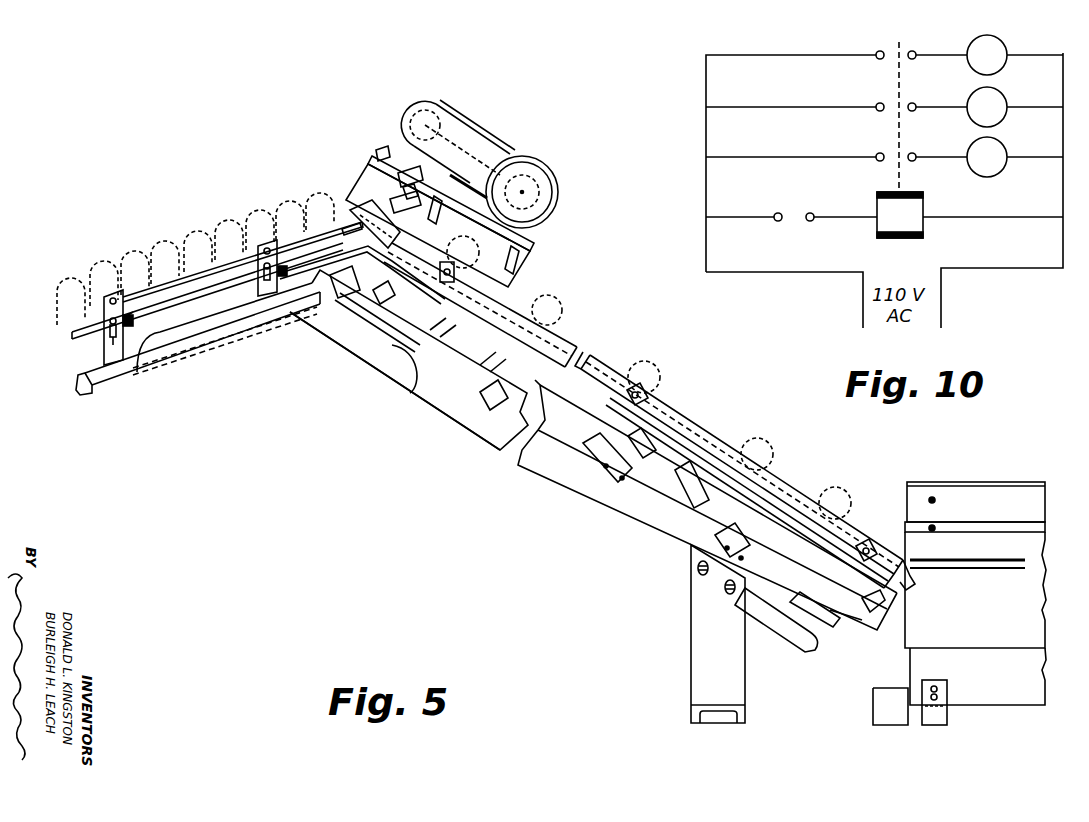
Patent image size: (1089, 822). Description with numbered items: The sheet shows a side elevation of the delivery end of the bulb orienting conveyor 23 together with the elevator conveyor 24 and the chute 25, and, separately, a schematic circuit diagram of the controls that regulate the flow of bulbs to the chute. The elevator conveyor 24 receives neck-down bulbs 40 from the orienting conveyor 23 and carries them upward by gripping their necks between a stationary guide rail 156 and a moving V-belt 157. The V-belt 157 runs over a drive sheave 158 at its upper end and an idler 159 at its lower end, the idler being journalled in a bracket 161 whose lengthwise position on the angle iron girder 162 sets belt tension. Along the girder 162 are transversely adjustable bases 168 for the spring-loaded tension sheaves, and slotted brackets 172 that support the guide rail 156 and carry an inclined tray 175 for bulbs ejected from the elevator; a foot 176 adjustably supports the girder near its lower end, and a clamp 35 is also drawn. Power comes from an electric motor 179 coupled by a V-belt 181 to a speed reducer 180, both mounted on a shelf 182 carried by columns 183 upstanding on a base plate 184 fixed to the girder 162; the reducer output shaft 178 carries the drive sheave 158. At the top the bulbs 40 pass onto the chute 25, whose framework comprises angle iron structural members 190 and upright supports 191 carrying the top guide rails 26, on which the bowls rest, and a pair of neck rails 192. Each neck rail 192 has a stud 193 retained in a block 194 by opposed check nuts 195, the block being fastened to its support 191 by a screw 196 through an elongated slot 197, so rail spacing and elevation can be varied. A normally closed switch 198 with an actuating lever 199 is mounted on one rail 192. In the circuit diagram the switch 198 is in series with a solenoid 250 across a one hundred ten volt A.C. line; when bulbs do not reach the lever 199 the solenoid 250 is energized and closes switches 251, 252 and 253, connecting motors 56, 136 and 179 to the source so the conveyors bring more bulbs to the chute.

In FIG. 5, the bulb orienting conveyor 23 is at (962, 476).
In FIG. 5, the elevator conveyor 24 is at (682, 372).
In FIG. 5, the chute 25 is at (162, 192).
In FIG. 5, the guide rails 26 is at (140, 292).
In FIG. 5, the bracket 35 is at (345, 296).
In FIG. 5, the bulbs 40 is at (232, 215).
In FIG. 10, the motor 56 is at (1003, 148).
In FIG. 10, the motor 136 is at (1003, 98).
In FIG. 5, the stationary guide rail 156 is at (673, 408).
In FIG. 5, the V-belt 157 is at (698, 431).
In FIG. 5, the drive sheave 158 is at (402, 242).
In FIG. 5, the idler 159 is at (913, 584).
In FIG. 5, the bracket 161 is at (847, 612).
In FIG. 5, the angle iron girder 162 is at (487, 441).
In FIG. 5, the base 168 is at (487, 398).
In FIG. 5, the brackets 172 is at (590, 447).
In FIG. 5, the inclined tray 175 is at (873, 607).
In FIG. 5, the foot 176 is at (691, 667).
In FIG. 5, the output shaft 178 is at (393, 196).
In FIG. 5, the electric motor 179 is at (552, 165).
In FIG. 10, the electric motor 179 is at (1003, 46).
In FIG. 5, the speed reducer 180 is at (398, 137).
In FIG. 5, the V-belt 181 is at (490, 150).
In FIG. 5, the shelf 182 is at (378, 157).
In FIG. 5, the columns 183 is at (525, 276).
In FIG. 5, the base plate 184 is at (425, 353).
In FIG. 5, the angle iron structural members 190 is at (92, 388).
In FIG. 5, the upright supports 191 is at (266, 240).
In FIG. 5, the neck rails 192 is at (110, 331).
In FIG. 5, the stud 193 is at (130, 318).
In FIG. 5, the block 194 is at (128, 332).
In FIG. 5, the check nuts 195 is at (128, 318).
In FIG. 5, the screw 196 is at (110, 336).
In FIG. 5, the elongated slot 197 is at (110, 322).
In FIG. 5, the switch 198 is at (340, 232).
In FIG. 10, the switch 198 is at (800, 211).
In FIG. 5, the actuating lever 199 is at (320, 277).
In FIG. 10, the solenoid 250 is at (925, 234).
In FIG. 10, the switch 251 is at (905, 151).
In FIG. 10, the switch 252 is at (905, 99).
In FIG. 10, the switch 253 is at (895, 58).